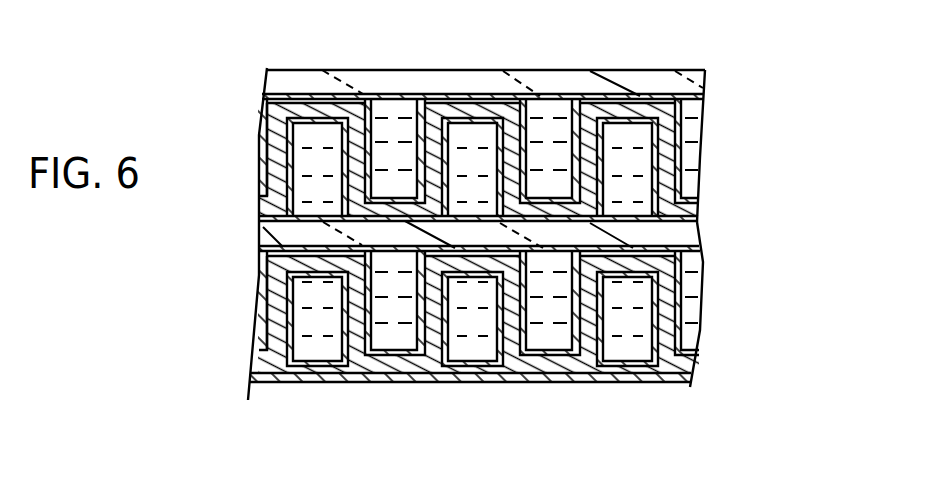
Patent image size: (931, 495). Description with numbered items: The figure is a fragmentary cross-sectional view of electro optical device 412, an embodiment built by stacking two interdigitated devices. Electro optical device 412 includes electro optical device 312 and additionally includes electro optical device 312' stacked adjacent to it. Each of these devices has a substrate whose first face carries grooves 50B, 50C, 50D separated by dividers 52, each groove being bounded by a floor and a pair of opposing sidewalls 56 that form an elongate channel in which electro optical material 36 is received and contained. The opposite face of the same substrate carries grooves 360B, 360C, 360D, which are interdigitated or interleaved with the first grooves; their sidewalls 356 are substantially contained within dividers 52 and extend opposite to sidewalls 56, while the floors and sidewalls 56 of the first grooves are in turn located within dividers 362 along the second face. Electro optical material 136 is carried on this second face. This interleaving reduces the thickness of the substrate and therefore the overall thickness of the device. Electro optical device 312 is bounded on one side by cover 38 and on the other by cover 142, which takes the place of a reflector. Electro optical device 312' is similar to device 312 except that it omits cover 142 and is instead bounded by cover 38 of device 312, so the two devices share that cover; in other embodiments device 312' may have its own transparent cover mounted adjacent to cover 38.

The cover 38 is at (280, 92).
The sidewalls 56 is at (280, 140).
The sidewalls 356 is at (300, 138).
The dividers 52 is at (330, 113).
The groove 50B is at (408, 127).
The groove 50C is at (555, 107).
The groove 50D is at (693, 130).
The groove 360B is at (287, 195).
The groove 360C is at (480, 137).
The groove 360D is at (637, 137).
The electro optical material 36 is at (537, 118).
The electro optical device 412 is at (712, 63).
The electro optical device 312' is at (745, 138).
The electro optical device 312 is at (519, 234).
The electro optical material 136 is at (270, 147).
The dividers 362 is at (277, 183).
The cover 142 is at (258, 378).